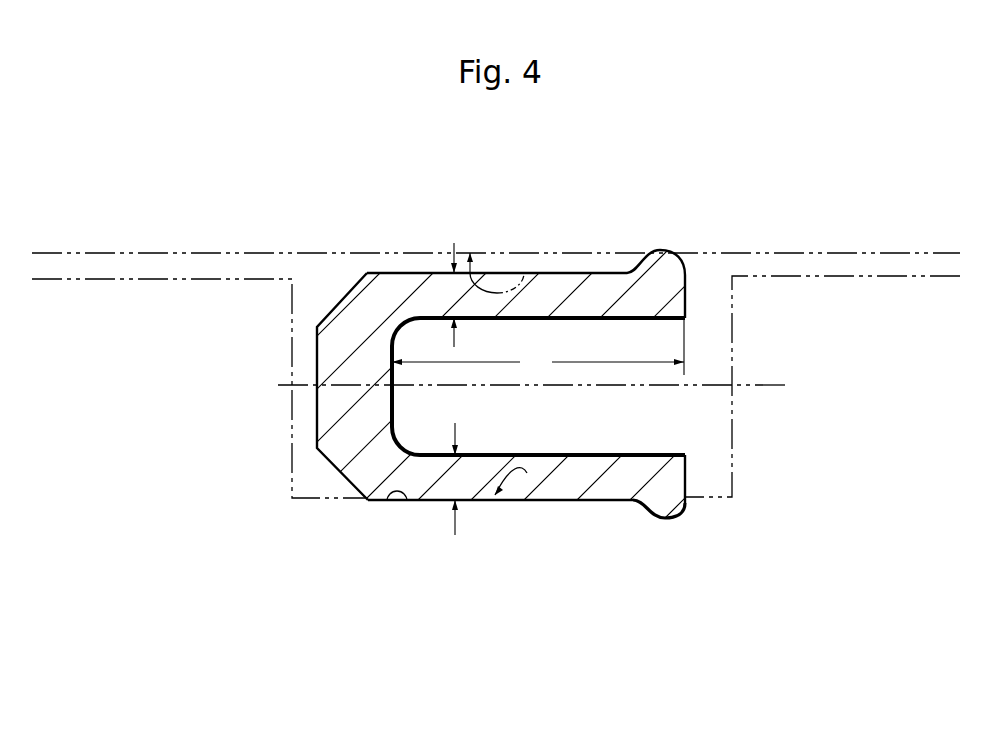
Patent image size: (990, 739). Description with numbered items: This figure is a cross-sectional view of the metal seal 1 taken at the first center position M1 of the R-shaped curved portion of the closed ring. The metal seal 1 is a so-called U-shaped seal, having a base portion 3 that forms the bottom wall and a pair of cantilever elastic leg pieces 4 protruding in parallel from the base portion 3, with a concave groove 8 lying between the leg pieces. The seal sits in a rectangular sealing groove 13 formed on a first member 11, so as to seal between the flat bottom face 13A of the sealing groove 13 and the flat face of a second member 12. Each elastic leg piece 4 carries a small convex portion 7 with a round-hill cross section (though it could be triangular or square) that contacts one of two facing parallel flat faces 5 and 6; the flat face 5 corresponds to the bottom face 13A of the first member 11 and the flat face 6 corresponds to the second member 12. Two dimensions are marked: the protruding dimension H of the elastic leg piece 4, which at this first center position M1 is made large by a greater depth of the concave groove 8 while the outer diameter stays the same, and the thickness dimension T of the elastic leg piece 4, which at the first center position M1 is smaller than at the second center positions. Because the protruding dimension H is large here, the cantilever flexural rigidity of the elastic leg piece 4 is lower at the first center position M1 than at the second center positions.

The metal seal 1 is at (404, 270).
The base portion 3 is at (338, 363).
The elastic leg piece 4 is at (587, 270).
The flat face 5 is at (409, 564).
The flat face 6 is at (534, 222).
The small convex portion 7 is at (660, 263).
The concave groove 8 is at (601, 390).
The first member 11 is at (846, 400).
The second member 12 is at (524, 278).
The sealing groove 13 is at (527, 473).
The bottom face 13A is at (408, 507).
The first center position M1 is at (337, 282).
The thickness dimension T is at (432, 268).
The protruding dimension H is at (538, 346).